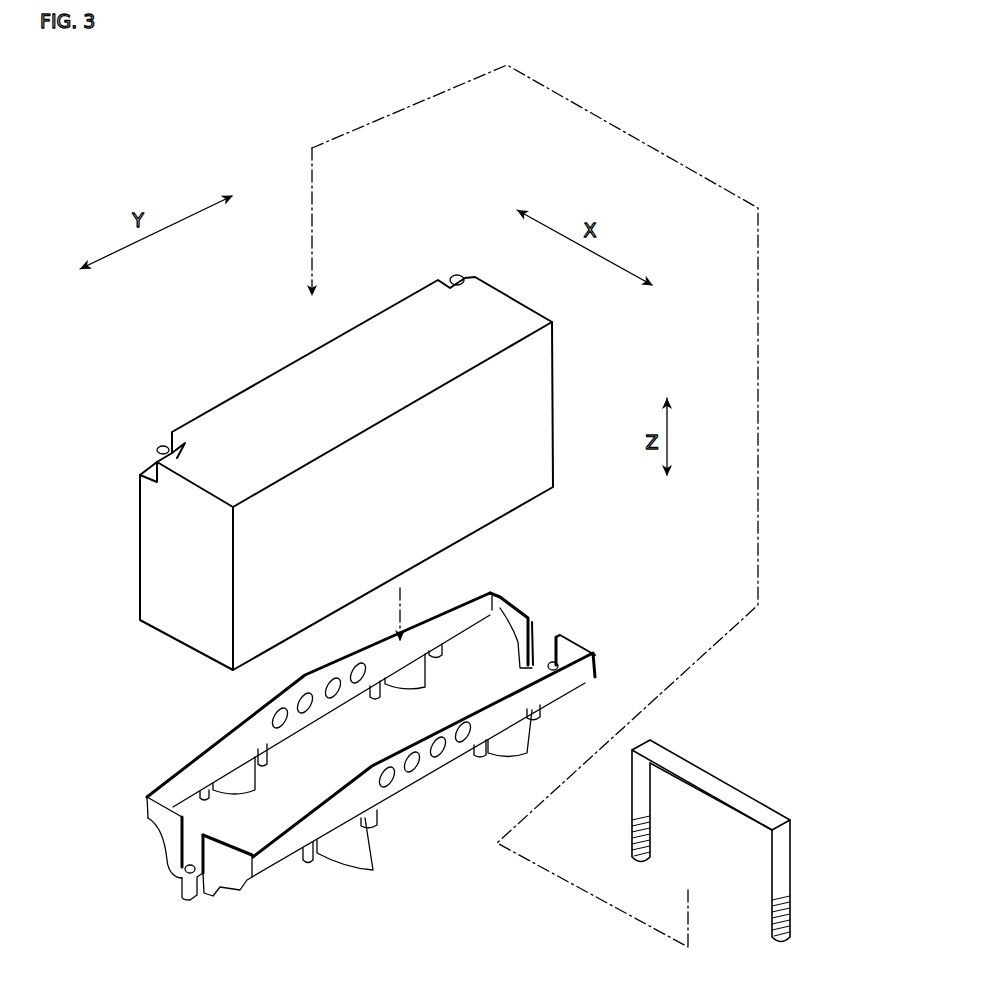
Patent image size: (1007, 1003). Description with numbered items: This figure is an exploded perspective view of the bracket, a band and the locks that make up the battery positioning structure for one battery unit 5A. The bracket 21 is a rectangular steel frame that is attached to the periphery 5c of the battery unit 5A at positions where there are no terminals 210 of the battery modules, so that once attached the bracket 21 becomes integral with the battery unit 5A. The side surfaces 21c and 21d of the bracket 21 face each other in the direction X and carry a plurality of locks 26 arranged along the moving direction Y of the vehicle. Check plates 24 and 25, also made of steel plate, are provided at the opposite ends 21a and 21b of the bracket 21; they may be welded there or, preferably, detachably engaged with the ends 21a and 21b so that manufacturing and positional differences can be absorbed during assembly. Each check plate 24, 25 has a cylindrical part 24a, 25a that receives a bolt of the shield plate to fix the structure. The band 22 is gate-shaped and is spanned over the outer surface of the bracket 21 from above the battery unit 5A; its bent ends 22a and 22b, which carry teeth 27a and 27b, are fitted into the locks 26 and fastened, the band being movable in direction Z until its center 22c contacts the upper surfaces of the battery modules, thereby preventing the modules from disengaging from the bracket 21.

The battery unit 5A is at (313, 448).
The periphery 5c is at (175, 572).
The terminals 210 is at (457, 276).
The bracket 21 is at (342, 749).
The end of bracket 21a is at (247, 876).
The end of bracket 21b is at (501, 597).
The side surface of bracket 21c is at (322, 706).
The side surface of bracket 21d is at (408, 780).
The check plate 24 is at (172, 835).
The cylindrical part 24a is at (188, 884).
The check plate 25 is at (523, 656).
The cylindrical part 25a is at (553, 661).
The locks 26 is at (255, 791).
The band 22 is at (716, 810).
The end of band 22a is at (635, 783).
The end of band 22b is at (783, 848).
The center of band 22c is at (727, 792).
The teeth 27a is at (631, 846).
The teeth 27b is at (795, 912).